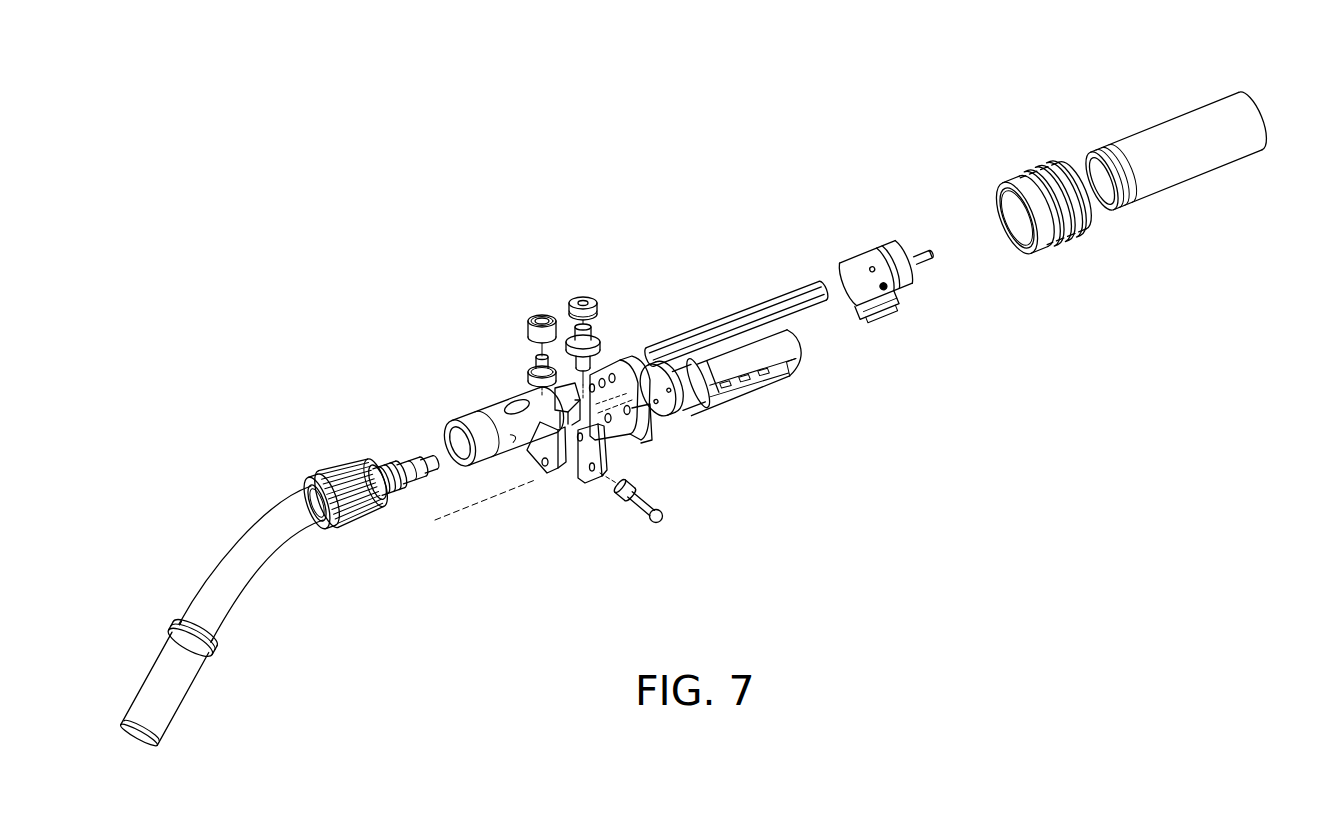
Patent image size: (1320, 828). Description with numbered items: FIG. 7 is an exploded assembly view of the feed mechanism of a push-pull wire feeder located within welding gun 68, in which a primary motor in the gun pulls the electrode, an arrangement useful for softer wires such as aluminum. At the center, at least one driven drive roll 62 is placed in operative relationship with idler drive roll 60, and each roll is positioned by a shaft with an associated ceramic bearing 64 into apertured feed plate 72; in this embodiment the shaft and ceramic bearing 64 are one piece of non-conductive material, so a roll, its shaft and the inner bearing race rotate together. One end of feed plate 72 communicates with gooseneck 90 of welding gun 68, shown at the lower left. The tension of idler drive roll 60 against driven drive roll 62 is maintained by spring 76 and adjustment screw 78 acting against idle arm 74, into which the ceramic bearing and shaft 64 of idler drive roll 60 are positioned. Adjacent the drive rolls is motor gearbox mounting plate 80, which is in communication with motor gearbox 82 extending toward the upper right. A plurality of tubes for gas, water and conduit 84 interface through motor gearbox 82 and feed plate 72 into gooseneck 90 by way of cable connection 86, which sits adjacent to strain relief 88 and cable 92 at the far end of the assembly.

The idler drive roll 60 is at (598, 292).
The drive roll 62 is at (525, 300).
The ceramic bearing 64 is at (528, 370).
The welding gun 68 is at (487, 180).
The apertured feed plate 72 is at (477, 407).
The idle arm 74 is at (580, 491).
The spring 76 is at (617, 498).
The adjustment screw 78 is at (647, 522).
The motor gearbox mounting plate 80 is at (645, 446).
The motor gearbox 82 is at (763, 385).
The conduit 84 is at (813, 323).
The cable connection 86 is at (871, 240).
The strain relief 88 is at (1004, 178).
The gooseneck 90 is at (333, 460).
The cable 92 is at (1140, 133).